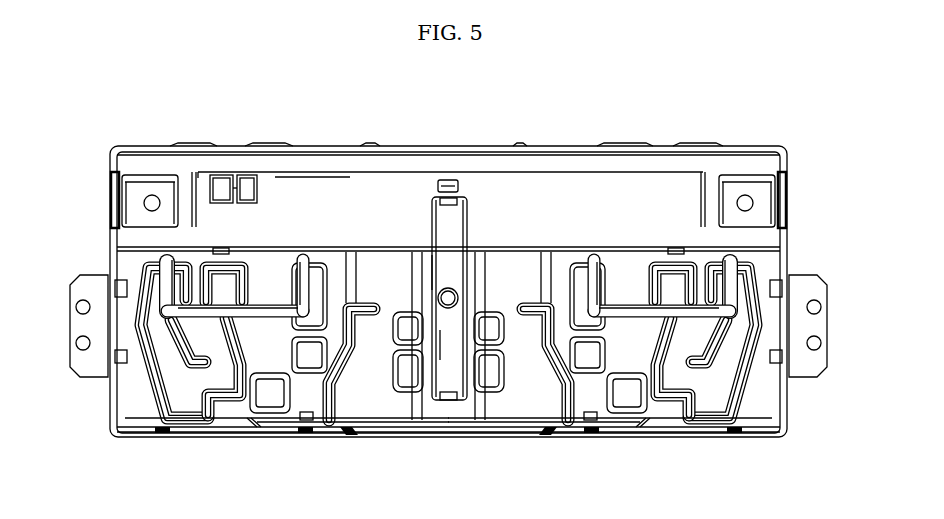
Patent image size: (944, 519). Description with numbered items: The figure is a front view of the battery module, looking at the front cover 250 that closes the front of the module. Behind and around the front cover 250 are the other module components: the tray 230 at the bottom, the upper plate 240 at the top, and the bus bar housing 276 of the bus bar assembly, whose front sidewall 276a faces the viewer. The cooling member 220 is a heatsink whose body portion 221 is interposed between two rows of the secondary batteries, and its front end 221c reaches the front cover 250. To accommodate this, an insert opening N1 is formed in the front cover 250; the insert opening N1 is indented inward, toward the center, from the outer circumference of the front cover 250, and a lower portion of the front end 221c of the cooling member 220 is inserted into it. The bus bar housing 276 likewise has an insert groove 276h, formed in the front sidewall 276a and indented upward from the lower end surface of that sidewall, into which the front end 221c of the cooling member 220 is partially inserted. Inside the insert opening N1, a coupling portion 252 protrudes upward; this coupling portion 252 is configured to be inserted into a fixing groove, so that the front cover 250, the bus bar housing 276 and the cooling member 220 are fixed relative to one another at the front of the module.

The cooling member 220 is at (425, 207).
The body portion 221 is at (430, 330).
The front end 221c is at (451, 347).
The tray 230 is at (258, 437).
The upper plate 240 is at (704, 140).
The front cover 250 is at (757, 413).
The coupling portion 252 is at (448, 402).
The bus bar housing 276 is at (291, 190).
The front sidewall 276a is at (547, 197).
The insert groove 276h is at (462, 213).
The insert opening N1 is at (435, 272).